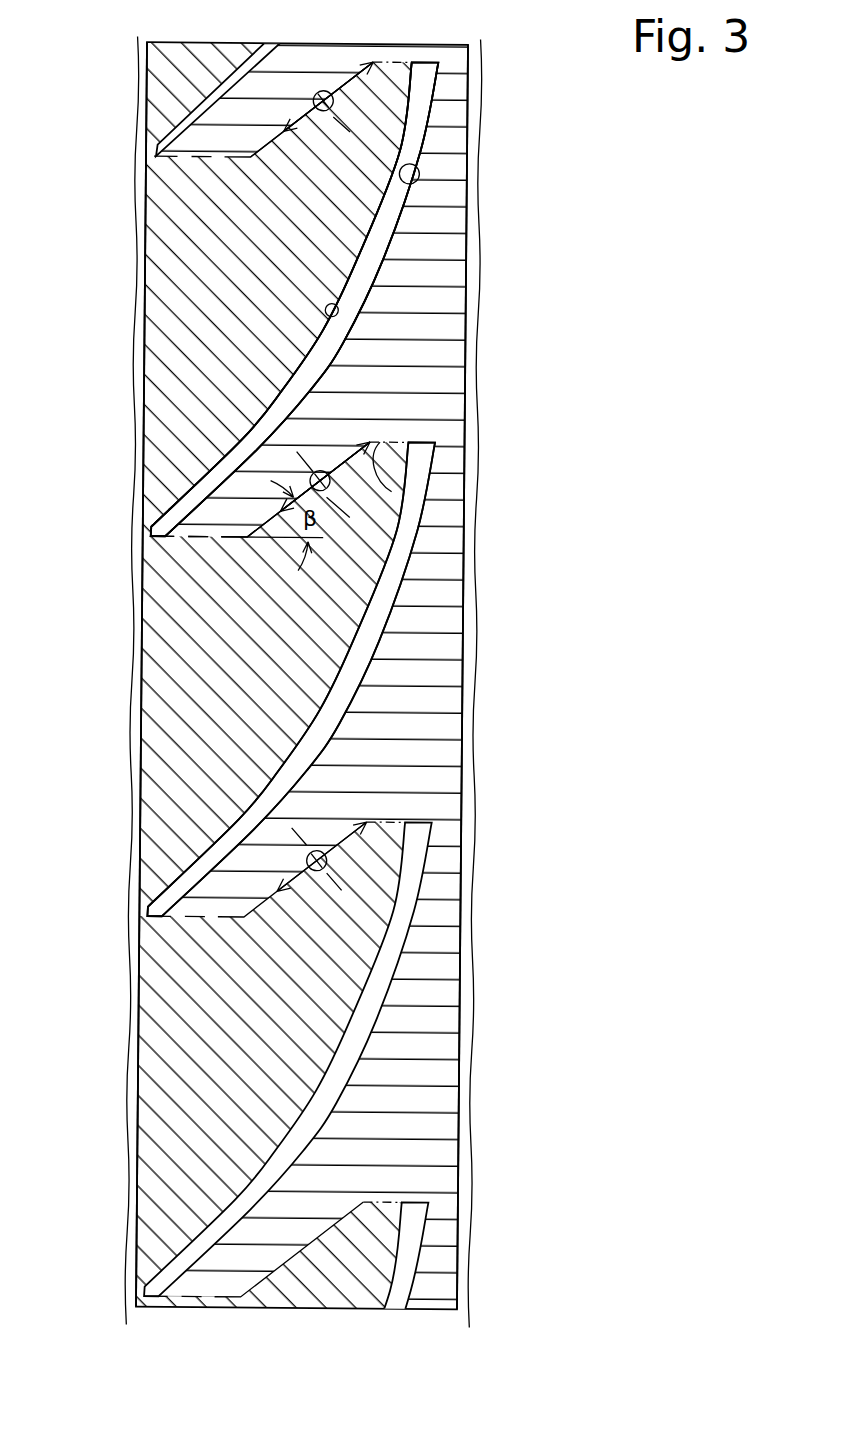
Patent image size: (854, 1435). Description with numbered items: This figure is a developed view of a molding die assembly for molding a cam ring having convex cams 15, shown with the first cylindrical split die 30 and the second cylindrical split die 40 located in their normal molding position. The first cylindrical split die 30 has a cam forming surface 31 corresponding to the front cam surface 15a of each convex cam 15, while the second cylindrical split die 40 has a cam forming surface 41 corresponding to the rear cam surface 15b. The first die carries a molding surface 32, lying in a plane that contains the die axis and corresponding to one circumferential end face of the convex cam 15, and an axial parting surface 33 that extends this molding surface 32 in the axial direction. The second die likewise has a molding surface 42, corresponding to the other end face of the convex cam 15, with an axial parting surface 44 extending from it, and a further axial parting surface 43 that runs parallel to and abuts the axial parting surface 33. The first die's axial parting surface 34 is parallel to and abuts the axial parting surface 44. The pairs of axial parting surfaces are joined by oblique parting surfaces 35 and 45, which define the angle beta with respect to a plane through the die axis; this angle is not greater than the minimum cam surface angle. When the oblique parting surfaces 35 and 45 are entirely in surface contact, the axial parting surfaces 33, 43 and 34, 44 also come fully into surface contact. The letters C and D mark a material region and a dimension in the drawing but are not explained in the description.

The convex cam 15 is at (417, 116).
The front cam surface 15a is at (376, 212).
The rear cam surface 15b is at (380, 270).
The first cylindrical split die 30 is at (186, 203).
The cam forming surface 31 is at (325, 310).
The molding surface 32 is at (155, 538).
The axial parting surface 33 is at (206, 537).
The axial parting surface 34 is at (380, 442).
The oblique parting surface 35 is at (393, 513).
The second cylindrical split die 40 is at (449, 240).
The cam forming surface 41 is at (422, 177).
The molding surface 42 is at (432, 440).
The axial parting surface 43 is at (228, 541).
The axial parting surface 44 is at (395, 489).
The oblique parting surface 45 is at (308, 489).
The material C is at (180, 278).
The dimension D is at (338, 56).